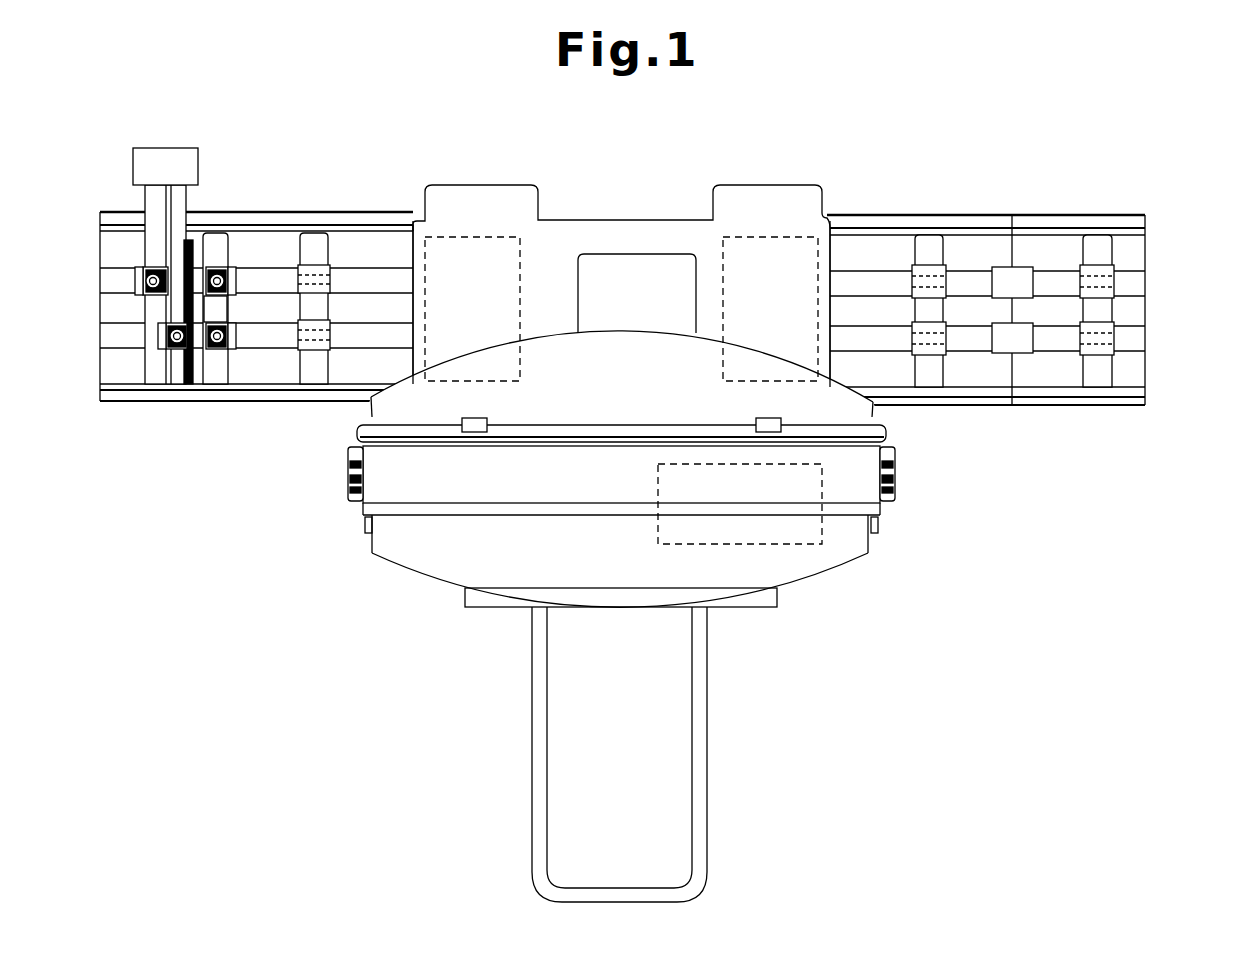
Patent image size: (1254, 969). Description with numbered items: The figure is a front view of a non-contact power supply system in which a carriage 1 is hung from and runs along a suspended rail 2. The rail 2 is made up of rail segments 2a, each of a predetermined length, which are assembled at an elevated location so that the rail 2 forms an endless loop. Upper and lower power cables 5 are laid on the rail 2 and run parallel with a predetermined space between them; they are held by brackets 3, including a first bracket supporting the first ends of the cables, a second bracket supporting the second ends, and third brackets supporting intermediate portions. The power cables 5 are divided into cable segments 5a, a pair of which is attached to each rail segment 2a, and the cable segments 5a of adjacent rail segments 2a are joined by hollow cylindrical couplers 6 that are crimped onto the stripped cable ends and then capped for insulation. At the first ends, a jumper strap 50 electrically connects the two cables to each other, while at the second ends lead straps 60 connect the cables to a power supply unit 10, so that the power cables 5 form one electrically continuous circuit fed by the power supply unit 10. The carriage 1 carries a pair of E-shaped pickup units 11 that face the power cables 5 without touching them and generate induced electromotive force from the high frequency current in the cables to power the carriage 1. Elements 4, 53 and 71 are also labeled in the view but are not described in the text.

The carriage 1 is at (418, 593).
The rail 2 is at (386, 211).
The rail segment 2a is at (872, 217).
The bracket 3 is at (147, 382).
The guide rod 4 is at (338, 281).
The power cable 5 is at (412, 282).
The cable segment 5a is at (100, 298).
The coupler 6 is at (997, 337).
The power supply unit 10 is at (160, 147).
The pickup unit 11 is at (465, 228).
The jumper strap 50 is at (217, 308).
The bearing 53 is at (137, 279).
The lead strap 60 is at (183, 262).
The bearing flange 71 is at (165, 350).